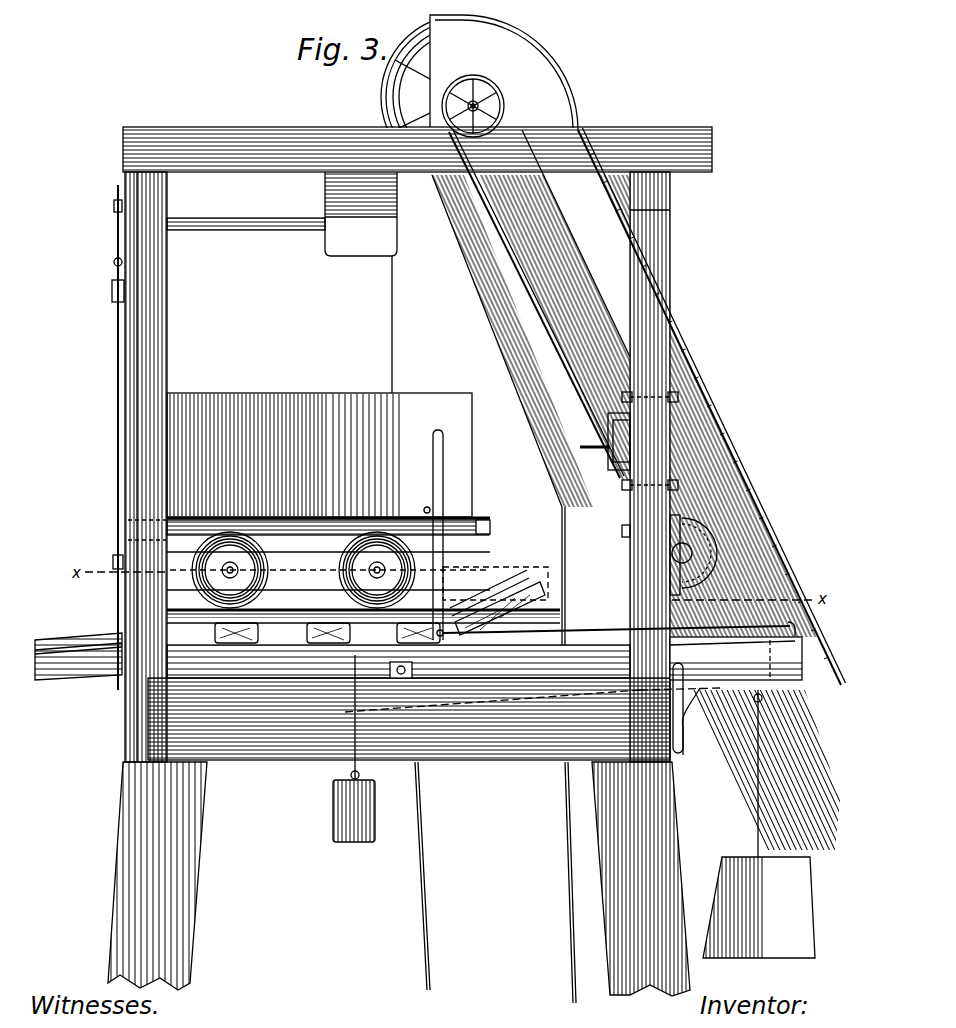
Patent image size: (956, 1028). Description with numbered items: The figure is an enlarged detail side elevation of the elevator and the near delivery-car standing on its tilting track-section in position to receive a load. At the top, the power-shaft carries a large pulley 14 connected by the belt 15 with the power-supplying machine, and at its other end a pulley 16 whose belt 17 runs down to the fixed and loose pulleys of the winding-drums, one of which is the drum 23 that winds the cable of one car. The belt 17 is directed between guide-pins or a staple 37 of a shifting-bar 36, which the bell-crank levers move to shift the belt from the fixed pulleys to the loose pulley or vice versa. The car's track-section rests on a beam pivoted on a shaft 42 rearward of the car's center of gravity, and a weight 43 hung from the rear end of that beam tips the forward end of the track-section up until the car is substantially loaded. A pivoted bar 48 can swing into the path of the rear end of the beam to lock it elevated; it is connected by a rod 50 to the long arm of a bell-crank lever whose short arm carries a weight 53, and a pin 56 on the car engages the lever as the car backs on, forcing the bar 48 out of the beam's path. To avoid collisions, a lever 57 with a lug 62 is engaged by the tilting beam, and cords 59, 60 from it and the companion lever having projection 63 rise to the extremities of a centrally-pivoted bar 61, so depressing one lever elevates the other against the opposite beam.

The large pulley 14 is at (396, 90).
The pulley 16 is at (486, 91).
The belt 17 is at (535, 312).
The belt 15 is at (394, 326).
The centrally-pivoted bar 61 is at (112, 241).
The projection 63 is at (237, 231).
The lug or projection 62 is at (361, 250).
The cord 59 is at (126, 477).
The cord 60 is at (126, 517).
The lever 57 is at (444, 481).
The pin or stud projection 56 is at (425, 507).
The shaft 42 is at (570, 645).
The link or rod 50 is at (613, 622).
The bar 48 is at (797, 629).
The shifting-bar 36 is at (613, 418).
The guide-pins or staple 37 is at (592, 450).
The drum 23 is at (708, 548).
The weight 53 is at (376, 808).
The weight 43 is at (759, 824).